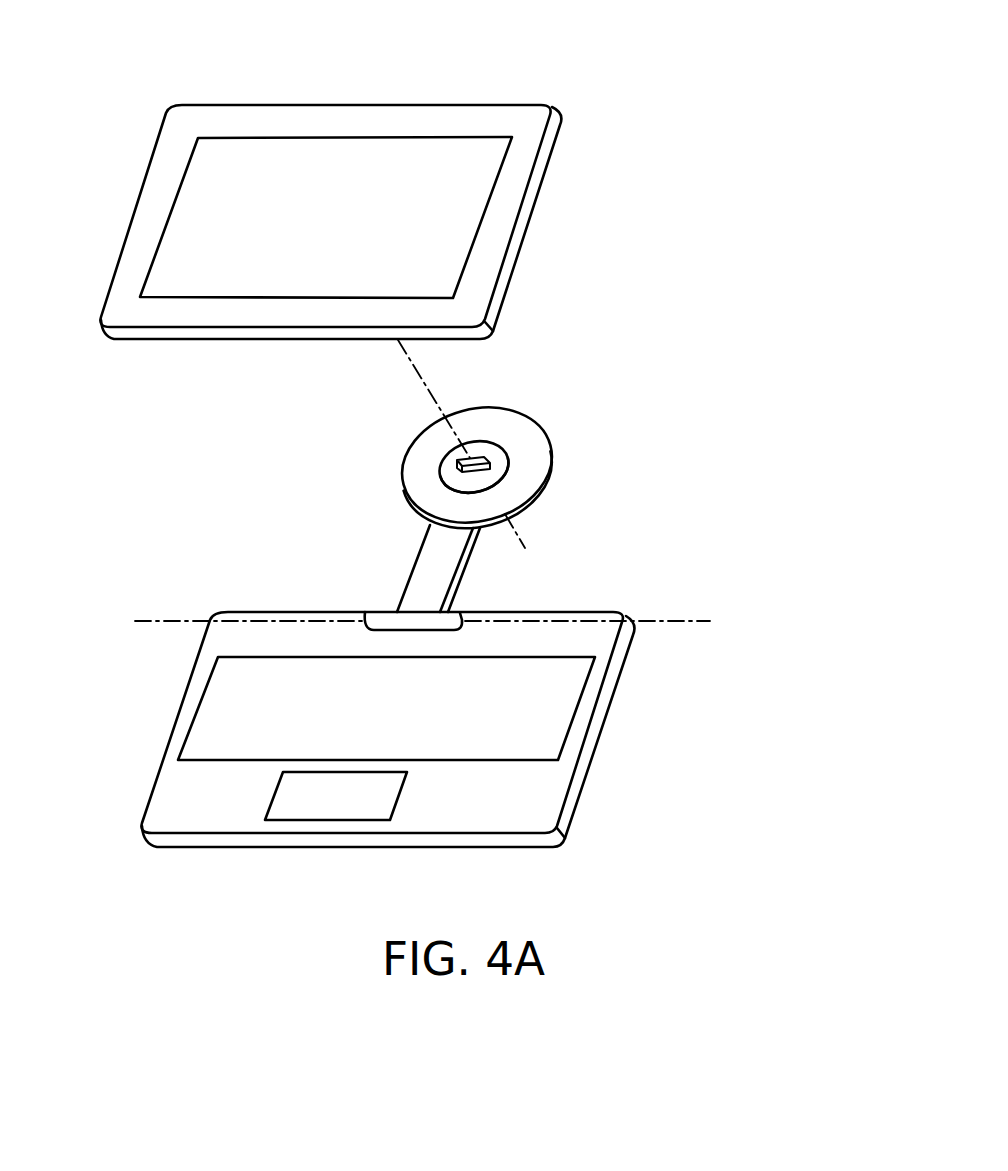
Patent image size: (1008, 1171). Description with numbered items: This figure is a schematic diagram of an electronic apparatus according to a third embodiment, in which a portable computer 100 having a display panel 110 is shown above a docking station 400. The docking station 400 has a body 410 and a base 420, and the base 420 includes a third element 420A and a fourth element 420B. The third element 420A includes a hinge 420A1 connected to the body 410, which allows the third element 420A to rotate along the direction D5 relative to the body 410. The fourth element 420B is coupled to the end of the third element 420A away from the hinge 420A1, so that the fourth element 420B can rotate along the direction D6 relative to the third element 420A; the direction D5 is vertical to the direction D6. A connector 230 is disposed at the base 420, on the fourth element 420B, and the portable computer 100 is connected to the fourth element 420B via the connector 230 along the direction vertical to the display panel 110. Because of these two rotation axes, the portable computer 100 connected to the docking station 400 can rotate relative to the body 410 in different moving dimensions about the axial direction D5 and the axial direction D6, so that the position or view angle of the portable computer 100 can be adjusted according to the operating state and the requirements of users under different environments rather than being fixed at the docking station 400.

The portable computer 100 is at (137, 200).
The display panel 110 is at (343, 175).
The connector 230 is at (443, 463).
The docking station 400 is at (745, 612).
The body 410 is at (603, 722).
The base 420 is at (530, 510).
The third element 420A is at (499, 577).
The hinge 420A1 is at (417, 620).
The fourth element 420B is at (515, 465).
The direction D5 is at (152, 622).
The direction D6 is at (413, 367).